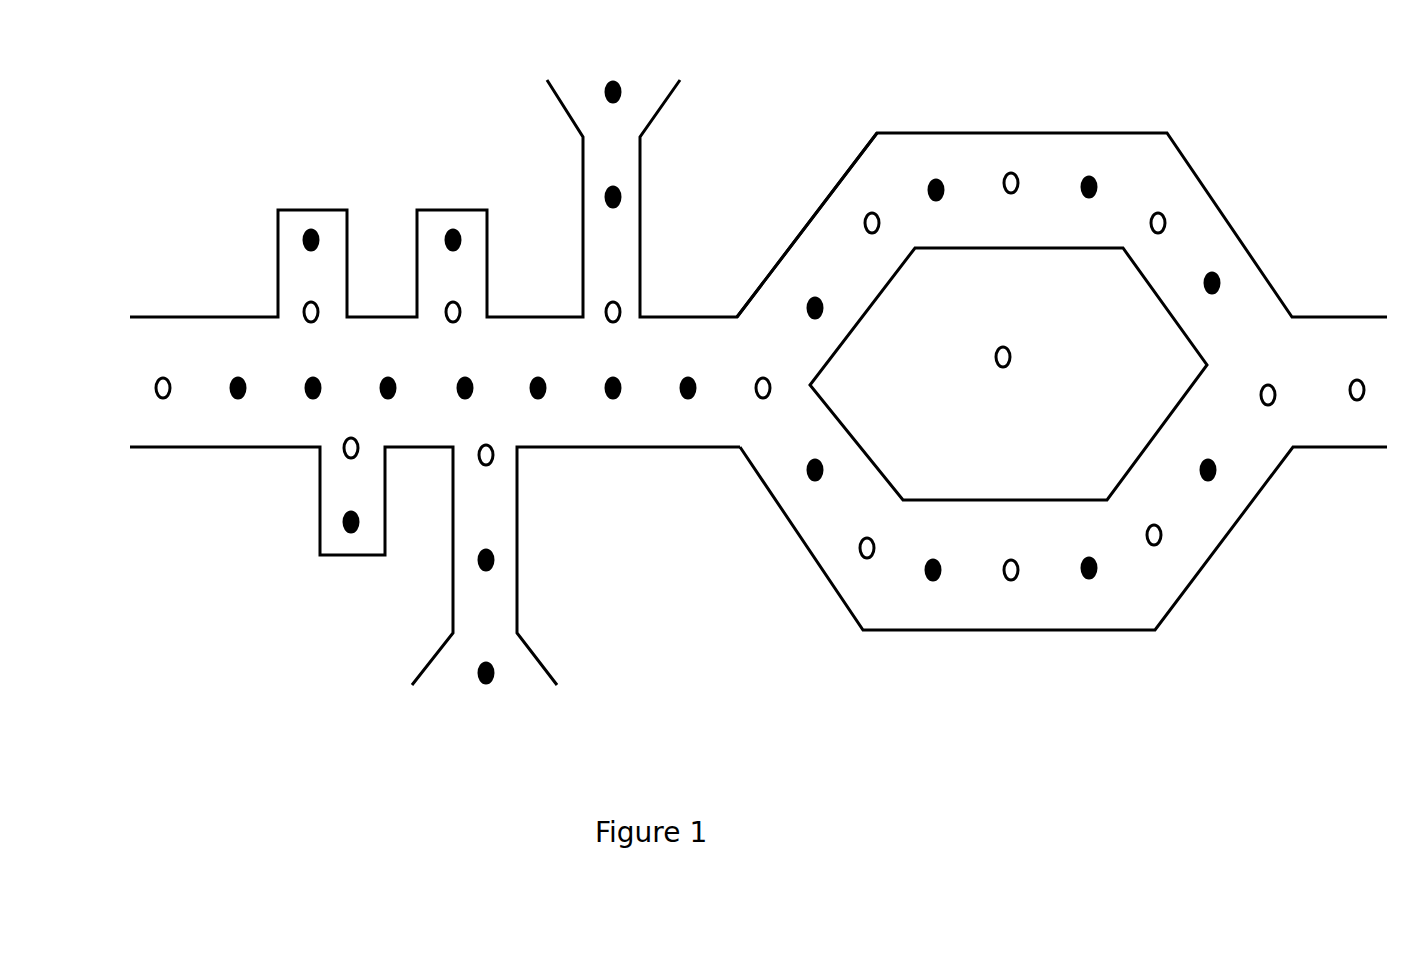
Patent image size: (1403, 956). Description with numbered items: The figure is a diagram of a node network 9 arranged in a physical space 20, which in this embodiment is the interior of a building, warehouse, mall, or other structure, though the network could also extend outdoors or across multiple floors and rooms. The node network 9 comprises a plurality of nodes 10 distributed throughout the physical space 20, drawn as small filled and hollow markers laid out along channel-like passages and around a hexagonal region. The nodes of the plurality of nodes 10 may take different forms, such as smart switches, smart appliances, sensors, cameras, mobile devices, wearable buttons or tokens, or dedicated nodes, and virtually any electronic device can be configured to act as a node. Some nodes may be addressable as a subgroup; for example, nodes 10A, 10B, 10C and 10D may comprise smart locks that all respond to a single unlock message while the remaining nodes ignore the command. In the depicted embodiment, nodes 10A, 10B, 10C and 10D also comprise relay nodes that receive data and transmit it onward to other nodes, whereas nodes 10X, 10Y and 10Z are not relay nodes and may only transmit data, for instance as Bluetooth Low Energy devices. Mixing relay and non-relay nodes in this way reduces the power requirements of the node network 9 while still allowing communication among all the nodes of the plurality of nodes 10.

The node network 9 is at (278, 417).
The plurality of nodes 10 is at (388, 376).
The physical space 20 is at (1105, 133).
The node 10A is at (858, 548).
The node 10X is at (924, 570).
The node 10B is at (1011, 581).
The node 10Y is at (1089, 579).
The node 10C is at (1154, 546).
The node 10Z is at (1208, 481).
The node 10D is at (1268, 406).